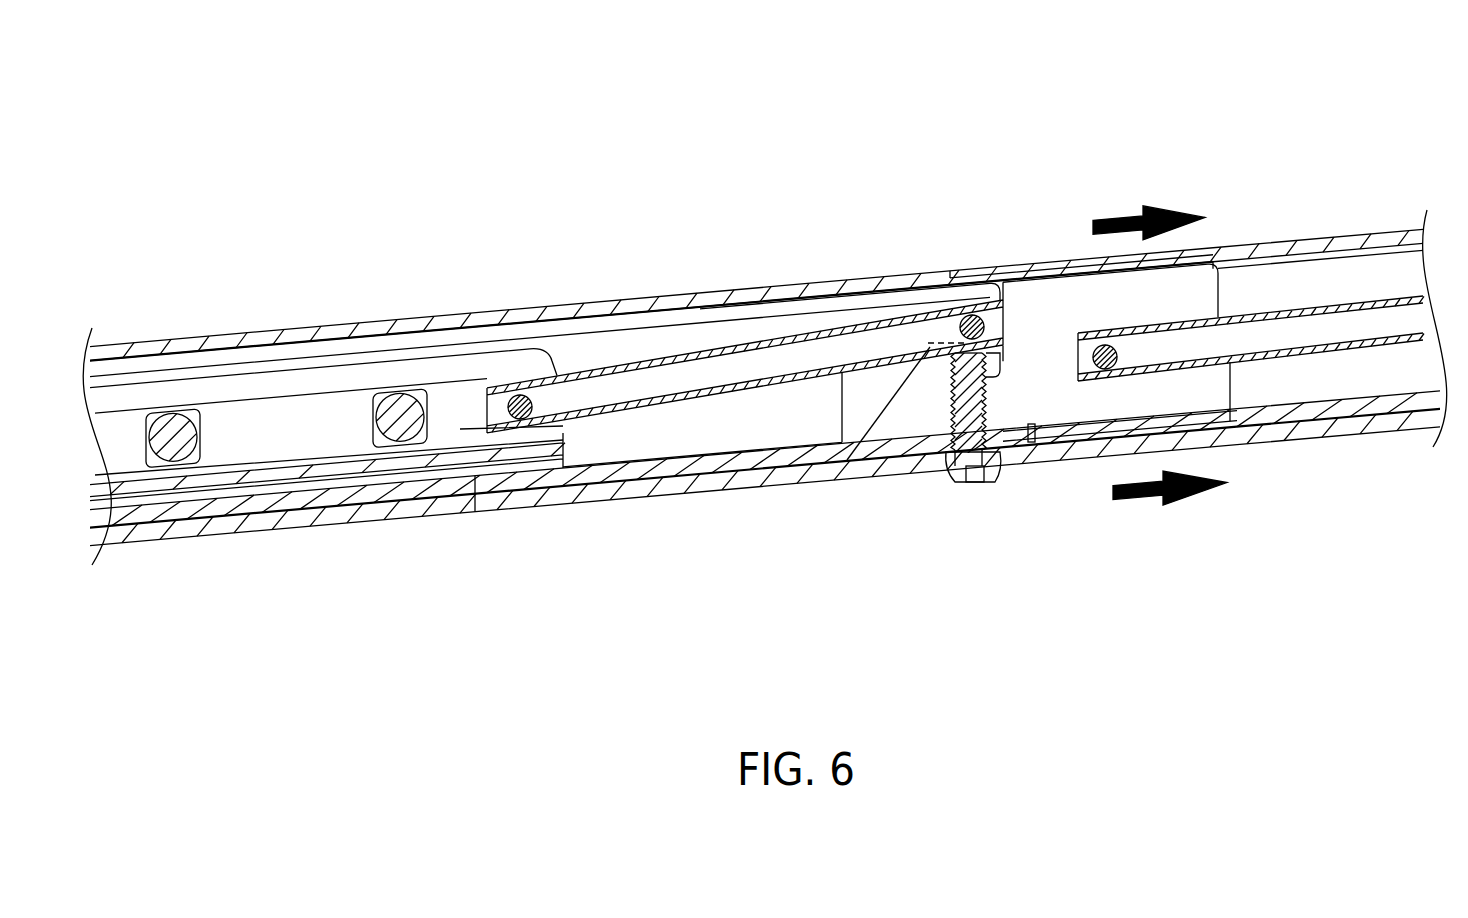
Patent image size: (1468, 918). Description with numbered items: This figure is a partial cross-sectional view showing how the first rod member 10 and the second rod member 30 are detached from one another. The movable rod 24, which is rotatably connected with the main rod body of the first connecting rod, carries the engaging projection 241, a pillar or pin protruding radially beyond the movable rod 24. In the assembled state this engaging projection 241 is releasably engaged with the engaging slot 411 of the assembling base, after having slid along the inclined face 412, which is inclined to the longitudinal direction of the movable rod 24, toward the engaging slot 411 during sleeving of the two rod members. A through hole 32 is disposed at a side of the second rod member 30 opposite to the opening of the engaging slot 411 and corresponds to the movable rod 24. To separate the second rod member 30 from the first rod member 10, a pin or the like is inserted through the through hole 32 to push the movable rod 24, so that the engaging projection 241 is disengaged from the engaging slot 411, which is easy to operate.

The first rod member 10 is at (283, 337).
The movable rod 24 is at (665, 380).
The engaging projection 241 is at (972, 312).
The second rod member 30 is at (1300, 240).
The through hole 32 is at (1007, 462).
The engaging slot 411 is at (993, 350).
The inclined face 412 is at (883, 417).